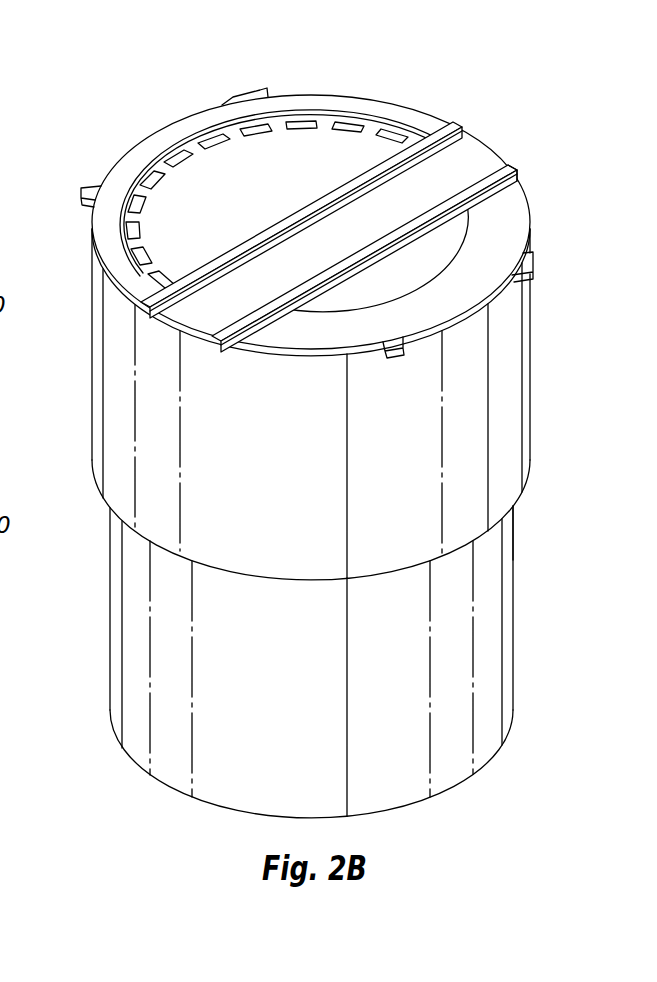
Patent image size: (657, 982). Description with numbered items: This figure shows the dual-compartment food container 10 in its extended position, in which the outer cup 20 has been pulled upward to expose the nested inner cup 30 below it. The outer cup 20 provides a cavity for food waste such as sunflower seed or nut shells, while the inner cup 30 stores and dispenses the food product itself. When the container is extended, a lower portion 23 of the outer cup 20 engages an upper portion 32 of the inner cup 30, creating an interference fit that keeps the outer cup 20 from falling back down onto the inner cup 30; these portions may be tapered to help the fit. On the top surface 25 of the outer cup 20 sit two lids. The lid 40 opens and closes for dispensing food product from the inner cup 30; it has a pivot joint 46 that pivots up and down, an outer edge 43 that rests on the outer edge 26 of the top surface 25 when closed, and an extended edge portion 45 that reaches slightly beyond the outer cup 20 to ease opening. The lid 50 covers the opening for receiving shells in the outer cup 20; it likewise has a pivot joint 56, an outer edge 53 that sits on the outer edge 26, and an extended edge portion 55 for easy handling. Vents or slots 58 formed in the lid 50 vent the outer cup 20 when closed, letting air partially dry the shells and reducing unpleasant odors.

The dual-compartment food container 10 is at (548, 82).
The outer cup 20 is at (545, 437).
The lower portion 23 is at (530, 486).
The top surface 25 is at (480, 146).
The outer edge 26 is at (497, 158).
The inner cup 30 is at (513, 657).
The upper portion 32 is at (513, 532).
The lid 40 is at (488, 271).
The outer edge 43 is at (362, 355).
The extended edge portion 45 is at (530, 262).
The pivot joint 46 is at (510, 170).
The lid 50 is at (341, 112).
The outer edge 53 is at (91, 228).
The extended edge portion 55 is at (266, 87).
The pivot joint 56 is at (432, 125).
The vents or slots 58 is at (315, 121).